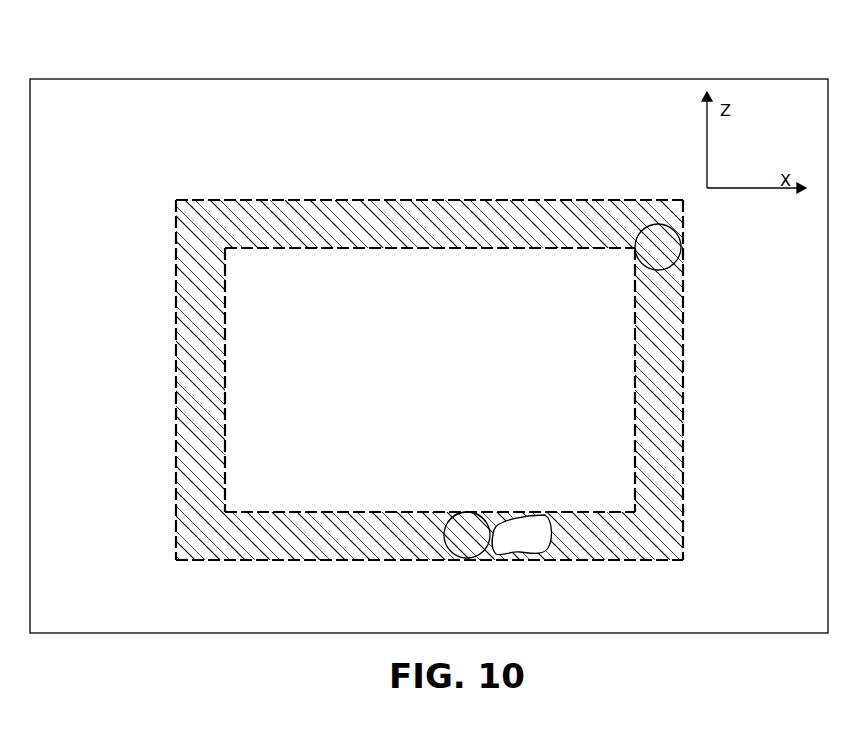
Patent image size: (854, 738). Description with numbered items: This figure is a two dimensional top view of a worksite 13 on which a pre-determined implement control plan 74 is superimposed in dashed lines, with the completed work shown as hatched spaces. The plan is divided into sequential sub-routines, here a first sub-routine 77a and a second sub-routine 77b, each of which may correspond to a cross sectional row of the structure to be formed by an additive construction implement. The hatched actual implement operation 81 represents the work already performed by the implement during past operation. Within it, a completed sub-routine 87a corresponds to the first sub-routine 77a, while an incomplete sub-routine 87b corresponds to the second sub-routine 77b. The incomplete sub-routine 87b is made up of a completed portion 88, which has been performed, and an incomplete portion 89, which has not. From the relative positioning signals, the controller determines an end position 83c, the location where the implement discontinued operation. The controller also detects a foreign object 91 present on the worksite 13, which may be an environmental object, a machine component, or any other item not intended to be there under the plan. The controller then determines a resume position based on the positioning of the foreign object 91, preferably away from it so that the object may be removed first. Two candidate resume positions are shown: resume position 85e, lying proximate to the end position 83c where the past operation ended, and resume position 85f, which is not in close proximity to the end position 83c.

The worksite 13 is at (150, 127).
The pre-determined implement control plan 74 is at (427, 351).
The actual implement operation 81 is at (206, 217).
The completed portion 88 is at (270, 233).
The resume position 85f is at (661, 224).
The resume position 85e is at (466, 559).
The incomplete portion 89 is at (665, 322).
The completed sub-routine 87a is at (662, 352).
The first sub-routine 77a is at (665, 445).
The second sub-routine 77b is at (188, 380).
The incomplete sub-routine 87b is at (202, 473).
The end position 83c is at (463, 521).
The foreign object 91 is at (543, 515).